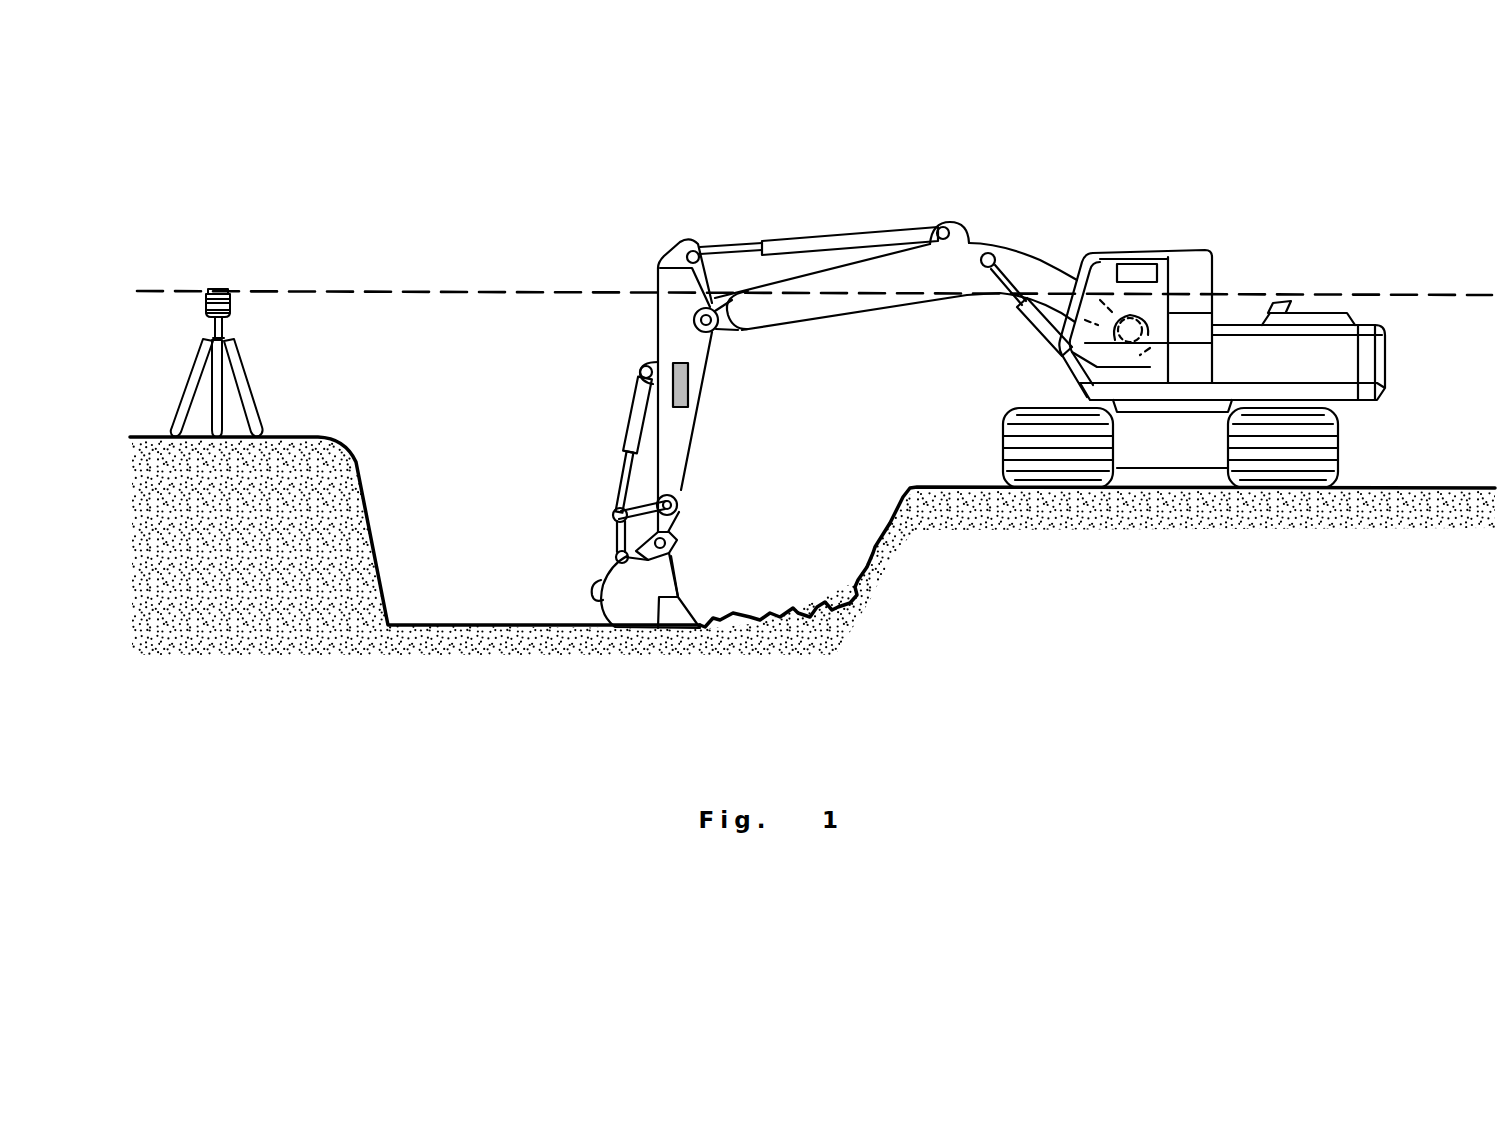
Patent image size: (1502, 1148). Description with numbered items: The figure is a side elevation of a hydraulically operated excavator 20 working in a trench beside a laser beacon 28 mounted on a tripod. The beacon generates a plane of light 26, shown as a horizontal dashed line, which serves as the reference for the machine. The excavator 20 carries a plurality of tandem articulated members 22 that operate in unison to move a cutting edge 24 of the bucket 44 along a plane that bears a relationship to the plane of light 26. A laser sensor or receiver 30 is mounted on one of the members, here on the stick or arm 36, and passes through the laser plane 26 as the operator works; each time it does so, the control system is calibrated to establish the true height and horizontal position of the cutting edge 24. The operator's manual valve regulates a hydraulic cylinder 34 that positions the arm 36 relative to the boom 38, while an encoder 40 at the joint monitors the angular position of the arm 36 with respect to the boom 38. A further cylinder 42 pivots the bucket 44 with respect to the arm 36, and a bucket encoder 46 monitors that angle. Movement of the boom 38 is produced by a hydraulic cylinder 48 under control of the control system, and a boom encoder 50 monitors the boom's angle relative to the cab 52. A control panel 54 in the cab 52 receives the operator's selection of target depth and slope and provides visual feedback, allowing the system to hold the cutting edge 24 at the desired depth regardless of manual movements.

The excavator 20 is at (1212, 252).
The tandem articulated members 22 is at (757, 330).
The cutting edge 24 is at (715, 624).
The plane of light 26 is at (328, 290).
The laser beacon 28 is at (232, 318).
The laser sensor or receiver 30 is at (690, 381).
The hydraulic cylinder 34 is at (812, 235).
The stick or arm 36 is at (700, 445).
The boom 38 is at (1003, 245).
The encoder 40 is at (694, 322).
The cylinder 42 is at (640, 424).
The bucket 44 is at (600, 596).
The bucket encoder 46 is at (680, 508).
The hydraulic cylinder 48 is at (1033, 325).
The boom encoder 50 is at (1062, 372).
The cab 52 is at (1372, 323).
The control panel 54 is at (1115, 272).